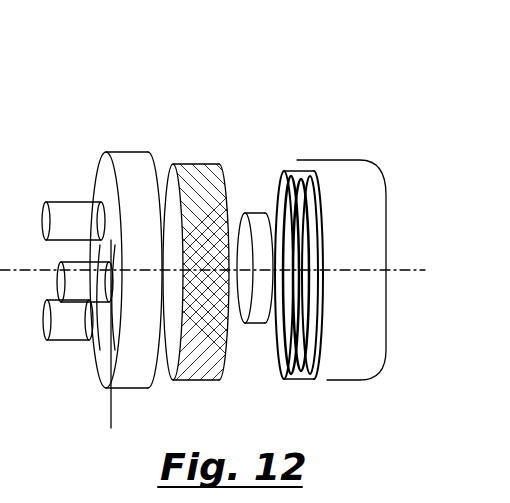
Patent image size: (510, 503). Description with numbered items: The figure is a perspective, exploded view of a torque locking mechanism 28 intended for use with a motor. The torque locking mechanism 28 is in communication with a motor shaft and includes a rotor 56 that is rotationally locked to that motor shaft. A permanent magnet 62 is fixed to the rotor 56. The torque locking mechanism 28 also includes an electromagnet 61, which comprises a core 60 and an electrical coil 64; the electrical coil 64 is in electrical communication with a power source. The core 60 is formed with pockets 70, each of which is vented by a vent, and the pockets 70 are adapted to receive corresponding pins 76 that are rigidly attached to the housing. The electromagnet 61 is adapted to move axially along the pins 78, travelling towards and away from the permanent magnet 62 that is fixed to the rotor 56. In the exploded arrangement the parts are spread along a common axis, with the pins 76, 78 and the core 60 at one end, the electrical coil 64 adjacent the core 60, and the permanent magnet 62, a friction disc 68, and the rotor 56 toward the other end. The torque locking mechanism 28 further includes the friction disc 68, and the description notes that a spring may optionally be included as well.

The torque locking mechanism 28 is at (238, 97).
The rotor 56 is at (360, 370).
The core 60 is at (126, 176).
The electromagnet 61 is at (165, 128).
The permanent magnet 62 is at (257, 318).
The electrical coil 64 is at (205, 163).
The friction disc 68 is at (277, 172).
The pockets 70 is at (97, 202).
The pins 76 is at (98, 302).
The pins 78 is at (78, 250).